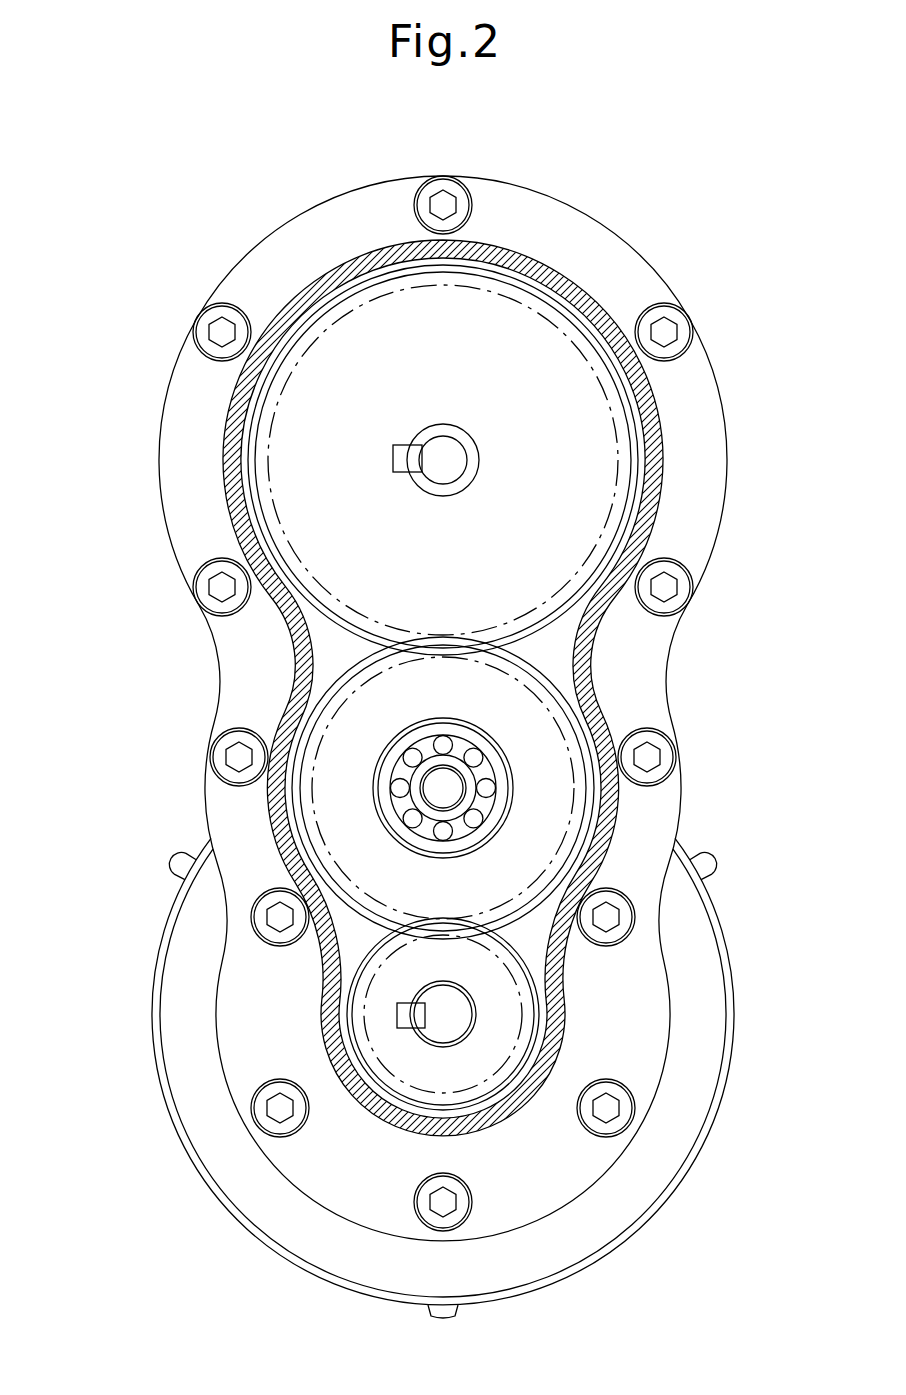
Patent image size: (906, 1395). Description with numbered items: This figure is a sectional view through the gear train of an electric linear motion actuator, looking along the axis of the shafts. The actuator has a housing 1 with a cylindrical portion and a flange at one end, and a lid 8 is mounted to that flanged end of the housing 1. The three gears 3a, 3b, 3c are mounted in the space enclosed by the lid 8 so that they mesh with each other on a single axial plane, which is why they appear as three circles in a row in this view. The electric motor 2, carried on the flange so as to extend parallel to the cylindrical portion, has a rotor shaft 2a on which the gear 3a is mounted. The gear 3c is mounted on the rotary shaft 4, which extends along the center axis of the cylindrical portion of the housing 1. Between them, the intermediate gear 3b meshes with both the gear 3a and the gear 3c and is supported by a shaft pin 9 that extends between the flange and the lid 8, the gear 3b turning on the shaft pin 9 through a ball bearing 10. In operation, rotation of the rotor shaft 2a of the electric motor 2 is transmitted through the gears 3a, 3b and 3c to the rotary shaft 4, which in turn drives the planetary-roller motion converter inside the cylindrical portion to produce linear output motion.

The housing 1 is at (298, 213).
The electric motor 2 is at (272, 1198).
The rotor shaft 2a is at (442, 1030).
The gear 3a is at (357, 998).
The intermediate gear 3b is at (323, 708).
The gear 3c is at (265, 413).
The rotary shaft 4 is at (440, 440).
The lid 8 is at (617, 1030).
The shaft pin 9 is at (438, 788).
The ball bearing 10 is at (400, 818).